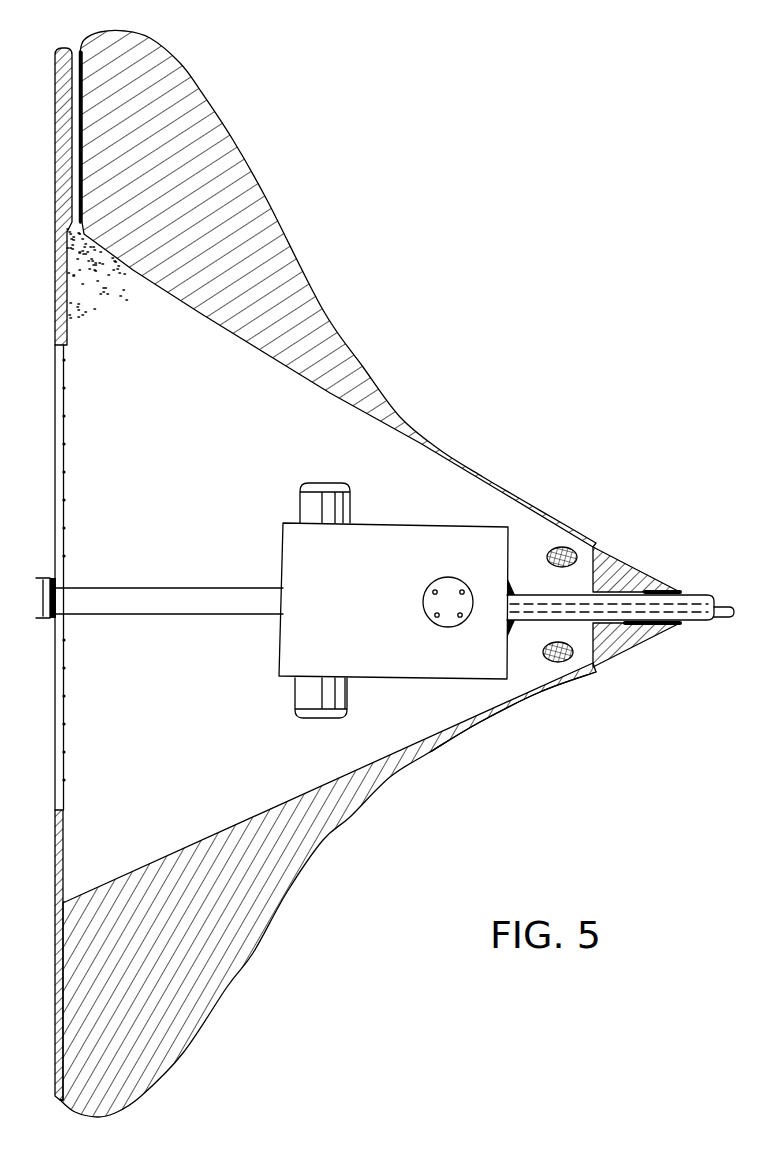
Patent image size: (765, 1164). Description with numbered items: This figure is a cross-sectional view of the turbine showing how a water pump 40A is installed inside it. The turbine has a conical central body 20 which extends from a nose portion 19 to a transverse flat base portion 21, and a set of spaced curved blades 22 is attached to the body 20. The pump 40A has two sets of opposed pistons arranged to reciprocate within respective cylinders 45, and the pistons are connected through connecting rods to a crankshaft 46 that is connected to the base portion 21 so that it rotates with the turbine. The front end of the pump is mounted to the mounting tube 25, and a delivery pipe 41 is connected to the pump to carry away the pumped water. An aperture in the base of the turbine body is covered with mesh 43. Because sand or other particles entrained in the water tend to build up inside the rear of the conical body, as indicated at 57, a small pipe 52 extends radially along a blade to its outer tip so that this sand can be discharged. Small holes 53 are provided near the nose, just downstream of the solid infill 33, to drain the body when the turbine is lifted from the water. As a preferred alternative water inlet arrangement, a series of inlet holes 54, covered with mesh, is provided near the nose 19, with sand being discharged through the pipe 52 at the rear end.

The nose portion 19 is at (673, 590).
The conical central body 20 is at (498, 718).
The base portion 21 is at (53, 722).
The curved blades 22 is at (213, 133).
The mounting tube 25 is at (693, 597).
The solid infill 33 is at (623, 640).
The water pump 40A is at (417, 535).
The delivery pipe 41 is at (722, 613).
The mesh 43 is at (65, 452).
The cylinders 45 is at (352, 510).
The crankshaft 46 is at (200, 598).
The small pipe 52 is at (78, 117).
The small holes 53 is at (590, 534).
The inlet holes 54 is at (562, 546).
The particle build-up 57 is at (90, 280).